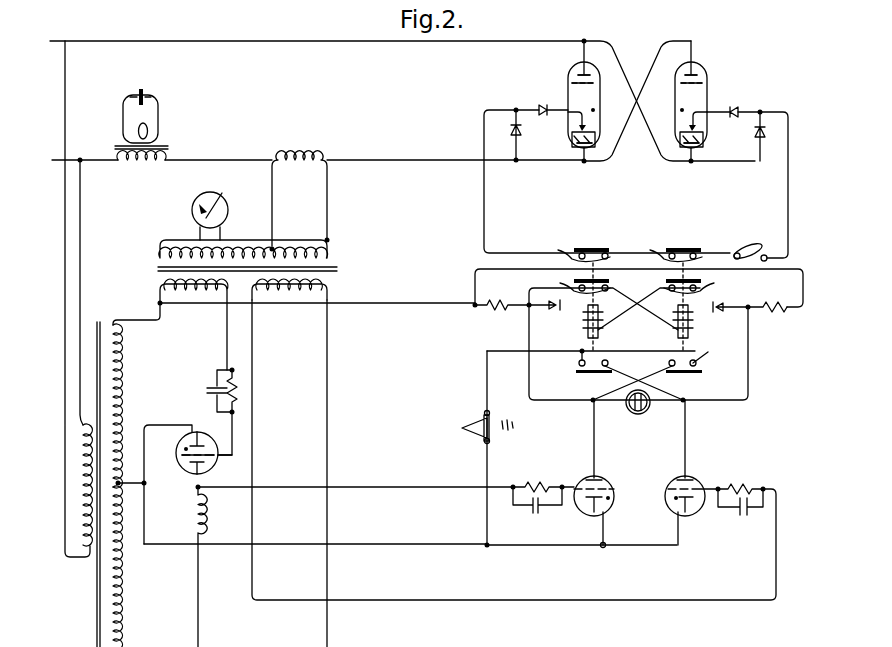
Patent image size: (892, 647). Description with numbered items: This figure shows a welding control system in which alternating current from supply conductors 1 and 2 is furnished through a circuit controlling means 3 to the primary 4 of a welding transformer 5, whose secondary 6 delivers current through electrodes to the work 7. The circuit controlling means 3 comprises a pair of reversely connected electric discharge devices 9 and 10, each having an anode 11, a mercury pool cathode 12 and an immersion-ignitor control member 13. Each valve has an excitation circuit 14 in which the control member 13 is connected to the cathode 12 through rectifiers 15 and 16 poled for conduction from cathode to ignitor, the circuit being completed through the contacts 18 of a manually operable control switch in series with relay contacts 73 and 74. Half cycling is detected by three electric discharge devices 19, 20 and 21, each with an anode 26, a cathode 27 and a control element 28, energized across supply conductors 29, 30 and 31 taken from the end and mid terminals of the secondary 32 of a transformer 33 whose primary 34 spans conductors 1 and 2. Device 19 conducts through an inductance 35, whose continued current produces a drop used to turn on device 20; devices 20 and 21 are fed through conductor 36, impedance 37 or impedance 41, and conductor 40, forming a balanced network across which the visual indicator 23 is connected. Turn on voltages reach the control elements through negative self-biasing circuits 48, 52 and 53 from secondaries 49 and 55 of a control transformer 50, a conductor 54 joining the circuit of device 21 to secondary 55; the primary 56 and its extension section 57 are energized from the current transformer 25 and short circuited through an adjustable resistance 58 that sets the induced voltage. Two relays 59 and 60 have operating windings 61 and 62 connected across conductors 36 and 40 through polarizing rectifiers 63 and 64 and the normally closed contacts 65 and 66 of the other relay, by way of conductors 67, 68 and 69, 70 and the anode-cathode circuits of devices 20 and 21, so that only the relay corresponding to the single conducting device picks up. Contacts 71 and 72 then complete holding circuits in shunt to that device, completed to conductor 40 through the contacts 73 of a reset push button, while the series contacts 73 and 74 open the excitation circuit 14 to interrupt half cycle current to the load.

The supply conductor 1 is at (89, 42).
The supply conductor 2 is at (93, 158).
The circuit controlling means 3 is at (629, 41).
The primary 4 is at (138, 166).
The welding transformer 5 is at (170, 147).
The secondary 6 is at (150, 128).
The work 7 is at (146, 95).
The electric discharge device 9 is at (600, 95).
The electric discharge device 10 is at (707, 82).
The anode 11 is at (570, 85).
The mercury pool cathode 12 is at (571, 141).
The control member 13 is at (570, 125).
The excitation circuit 14 is at (484, 193).
The rectifier 15 is at (510, 131).
The rectifier 16 is at (542, 108).
The contacts 18 is at (747, 246).
The electric discharge device 19 is at (198, 432).
The electric discharge device 20 is at (603, 478).
The electric discharge device 21 is at (677, 478).
The visual indicator 23 is at (648, 407).
The current transformer 25 is at (297, 151).
The anode 26 is at (197, 476).
The cathode 27 is at (208, 445).
The control element 28 is at (185, 458).
The supply conductor 29 is at (138, 320).
The supply conductor 30 is at (131, 483).
The supply conductor 31 is at (327, 400).
The secondary 32 is at (120, 583).
The transformer 33 is at (97, 320).
The primary 34 is at (75, 485).
The inductance 35 is at (206, 510).
The conductor 36 is at (380, 304).
The impedance 37 is at (492, 309).
The conductor 40 is at (290, 543).
The impedance 41 is at (771, 313).
The negative self-biasing circuit 48 is at (222, 381).
The secondary 49 is at (192, 292).
The control transformer 50 is at (156, 267).
The negative self-biasing circuit 52 is at (528, 508).
The negative self-biasing circuit 53 is at (748, 516).
The conductor 54 is at (252, 425).
The secondary 55 is at (287, 292).
The primary 56 is at (293, 248).
The section 57 is at (243, 248).
The adjustable resistance 58 is at (194, 198).
The relay 59 is at (600, 345).
The relay 60 is at (692, 344).
The operating winding 61 is at (586, 318).
The operating winding 62 is at (692, 318).
The rectifier 63 is at (556, 304).
The rectifier 64 is at (718, 306).
The contacts 65 is at (576, 288).
The contacts 66 is at (707, 288).
The conductor 67 is at (550, 400).
The conductor 68 is at (594, 442).
The conductor 69 is at (748, 380).
The conductor 70 is at (685, 420).
The contacts 71 is at (578, 363).
The contacts 72 is at (698, 360).
The contacts 73 is at (575, 250).
The contacts 74 is at (668, 252).